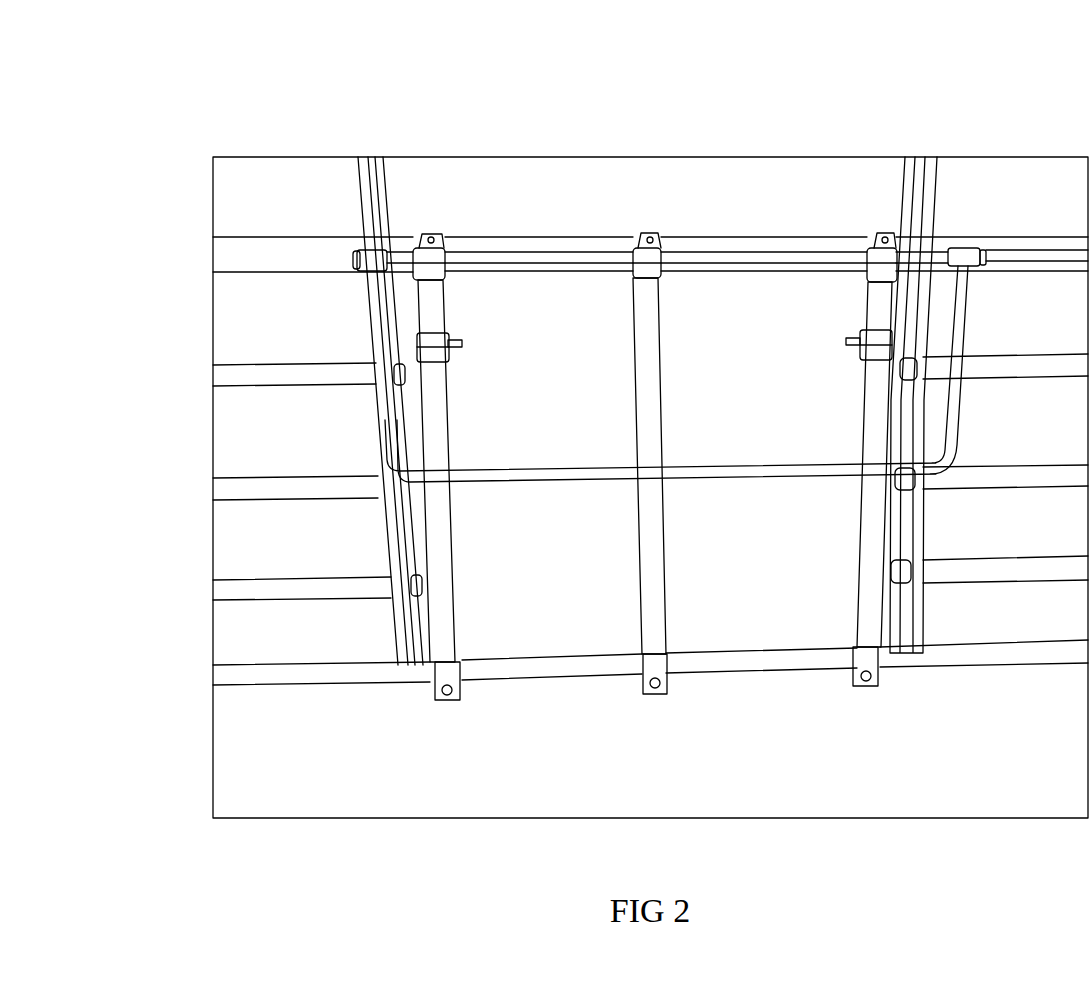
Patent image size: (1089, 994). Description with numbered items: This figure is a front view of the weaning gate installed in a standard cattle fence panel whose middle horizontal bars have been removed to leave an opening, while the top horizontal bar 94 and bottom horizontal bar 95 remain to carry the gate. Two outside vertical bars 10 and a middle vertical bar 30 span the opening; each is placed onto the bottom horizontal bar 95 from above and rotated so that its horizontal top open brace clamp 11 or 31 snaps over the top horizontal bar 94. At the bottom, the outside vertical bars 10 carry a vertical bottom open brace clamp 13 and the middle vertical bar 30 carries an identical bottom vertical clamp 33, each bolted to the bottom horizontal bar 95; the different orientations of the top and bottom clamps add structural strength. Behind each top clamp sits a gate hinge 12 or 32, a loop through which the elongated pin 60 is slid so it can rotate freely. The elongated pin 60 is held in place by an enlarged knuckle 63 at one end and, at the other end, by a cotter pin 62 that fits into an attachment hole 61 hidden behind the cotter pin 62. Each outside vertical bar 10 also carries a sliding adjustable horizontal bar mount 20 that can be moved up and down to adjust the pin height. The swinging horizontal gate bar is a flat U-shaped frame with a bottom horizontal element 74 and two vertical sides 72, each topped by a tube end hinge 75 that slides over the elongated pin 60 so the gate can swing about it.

The outside vertical bar 10 is at (437, 612).
The horizontal top open brace clamp 11 is at (441, 238).
The gate hinge 12 is at (430, 232).
The vertical bottom open brace clamp 13 is at (438, 688).
The adjustable horizontal bar mount 20 is at (448, 352).
The middle vertical bar 30 is at (662, 603).
The horizontal top open brace clamp 31 is at (653, 233).
The gate hinge 32 is at (645, 240).
The bottom vertical clamp 33 is at (655, 665).
The elongated pin 60 is at (553, 258).
The attachment hole 61 is at (353, 266).
The cotter pin 62 is at (353, 237).
The knuckle 63 is at (982, 260).
The vertical side 72 is at (385, 407).
The bottom horizontal element 74 is at (590, 468).
The tube end hinge 75 is at (382, 250).
The top horizontal bar 94 is at (257, 256).
The bottom horizontal bar 95 is at (330, 672).